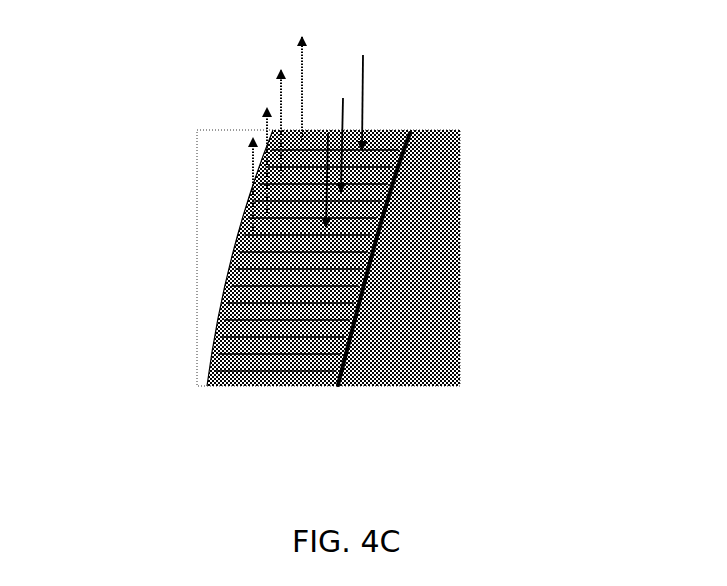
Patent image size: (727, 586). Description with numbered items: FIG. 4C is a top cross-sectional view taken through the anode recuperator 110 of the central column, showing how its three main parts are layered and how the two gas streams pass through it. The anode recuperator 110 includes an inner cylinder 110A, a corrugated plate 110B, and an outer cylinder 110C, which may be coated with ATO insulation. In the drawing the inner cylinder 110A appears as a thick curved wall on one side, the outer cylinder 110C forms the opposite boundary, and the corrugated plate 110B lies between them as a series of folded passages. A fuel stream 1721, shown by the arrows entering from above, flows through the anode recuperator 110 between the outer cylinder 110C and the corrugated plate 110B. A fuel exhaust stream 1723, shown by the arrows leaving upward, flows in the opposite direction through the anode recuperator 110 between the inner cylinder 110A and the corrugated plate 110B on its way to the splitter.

The anode recuperator 110 is at (350, 455).
The inner cylinder 110A is at (363, 283).
The corrugated plate 110B is at (313, 320).
The outer cylinder 110C is at (237, 283).
The fuel stream 1721 is at (363, 97).
The fuel exhaust stream 1723 is at (251, 175).